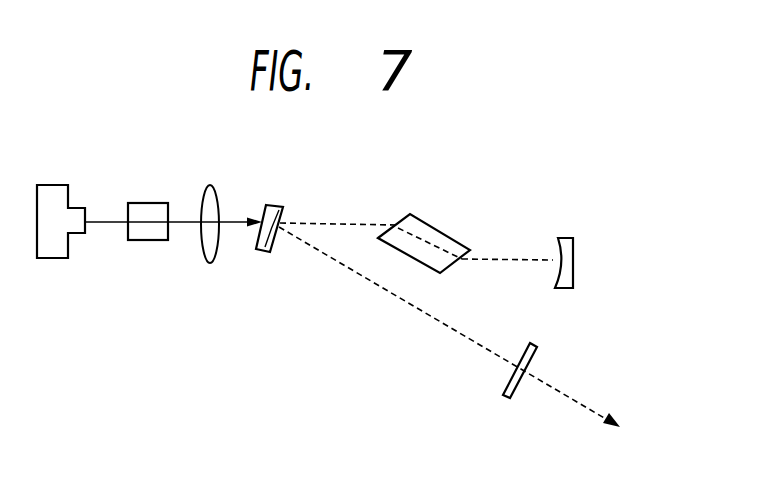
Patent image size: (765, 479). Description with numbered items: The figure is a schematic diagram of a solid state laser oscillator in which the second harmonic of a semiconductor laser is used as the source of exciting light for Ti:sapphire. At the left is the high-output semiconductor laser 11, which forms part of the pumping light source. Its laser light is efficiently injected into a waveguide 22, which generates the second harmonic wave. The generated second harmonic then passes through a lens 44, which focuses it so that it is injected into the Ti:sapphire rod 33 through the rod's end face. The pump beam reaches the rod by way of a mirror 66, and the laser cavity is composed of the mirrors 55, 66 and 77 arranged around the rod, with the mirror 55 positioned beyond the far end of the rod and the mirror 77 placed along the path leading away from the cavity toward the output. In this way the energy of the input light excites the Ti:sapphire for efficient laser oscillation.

The high-output semiconductor laser 11 is at (41, 185).
The waveguide 22 is at (152, 203).
The lens 44 is at (212, 185).
The mirror 66 is at (277, 204).
The Ti:sapphire rod 33 is at (430, 226).
The mirror 55 is at (568, 238).
The mirror 77 is at (530, 343).